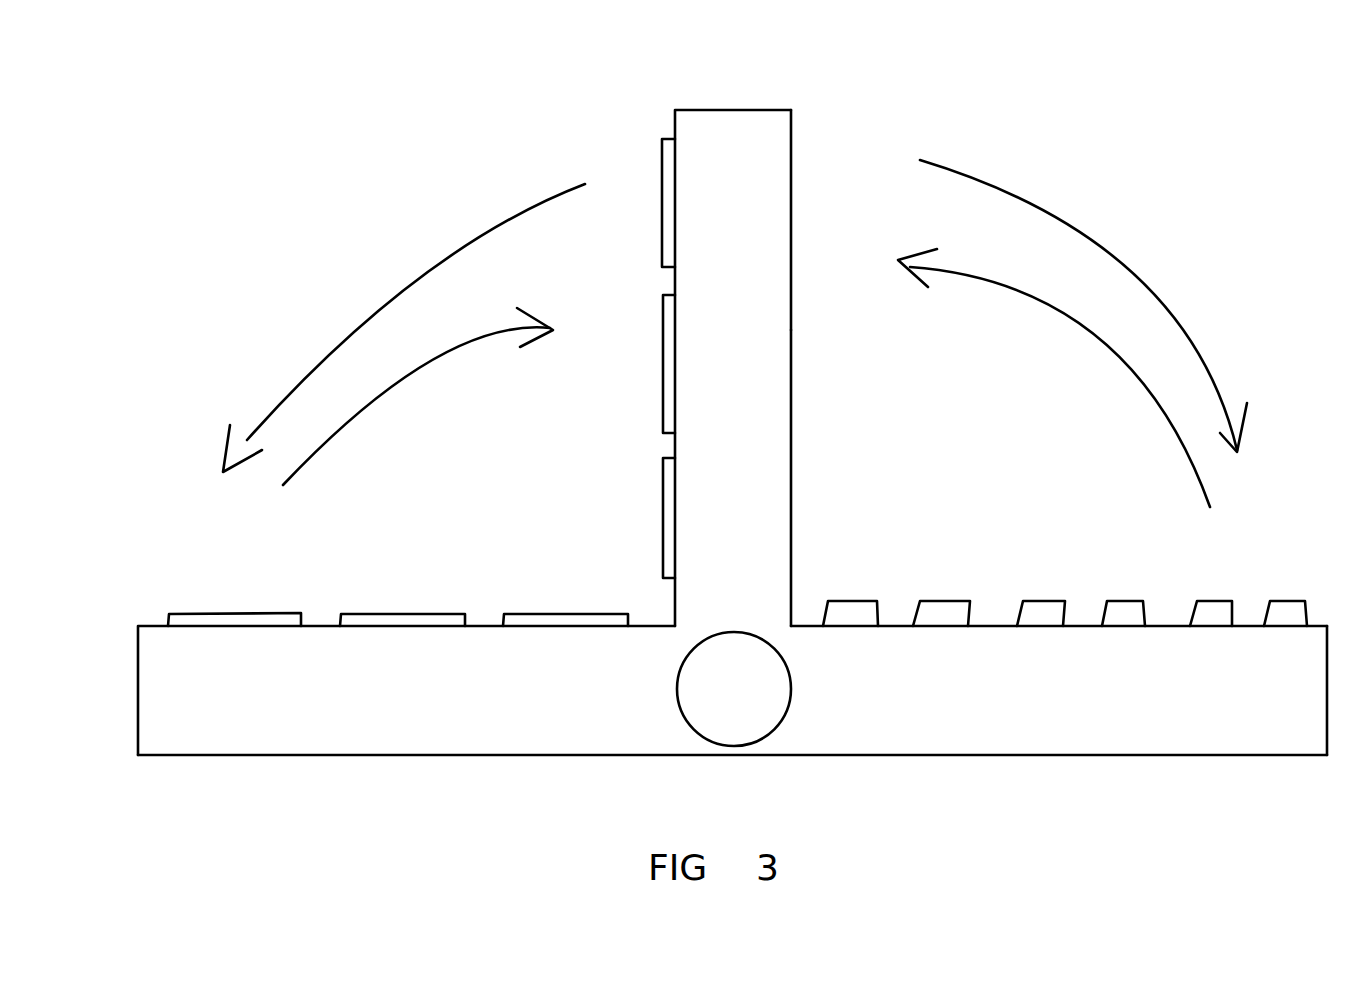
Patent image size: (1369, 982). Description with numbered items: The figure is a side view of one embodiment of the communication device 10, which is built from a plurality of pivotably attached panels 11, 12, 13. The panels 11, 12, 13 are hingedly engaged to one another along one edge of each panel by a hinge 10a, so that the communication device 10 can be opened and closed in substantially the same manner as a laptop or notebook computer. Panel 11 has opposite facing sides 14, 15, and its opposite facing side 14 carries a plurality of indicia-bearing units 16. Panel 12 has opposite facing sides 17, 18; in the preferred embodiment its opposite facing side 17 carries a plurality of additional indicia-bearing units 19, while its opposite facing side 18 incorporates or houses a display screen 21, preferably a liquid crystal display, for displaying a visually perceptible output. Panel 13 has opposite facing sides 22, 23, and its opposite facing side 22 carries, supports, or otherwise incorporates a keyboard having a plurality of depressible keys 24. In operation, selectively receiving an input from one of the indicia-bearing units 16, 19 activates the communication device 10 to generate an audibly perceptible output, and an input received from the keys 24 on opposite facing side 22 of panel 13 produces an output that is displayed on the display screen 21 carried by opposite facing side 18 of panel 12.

The communication device 10 is at (388, 143).
The hinge 10a is at (772, 705).
The panel 11 is at (227, 728).
The panel 12 is at (730, 118).
The panel 13 is at (1110, 728).
The opposite facing side 14 is at (484, 623).
The opposite facing side 15 is at (478, 757).
The indicia-bearing units 16 is at (235, 612).
The opposite facing side 17 is at (674, 283).
The opposite facing side 18 is at (790, 240).
The indicia-bearing units 19 is at (662, 367).
The display screen 21 is at (790, 360).
The opposite facing side 22 is at (1173, 623).
The opposite facing side 23 is at (1237, 752).
The depressible keys 24 is at (1040, 602).